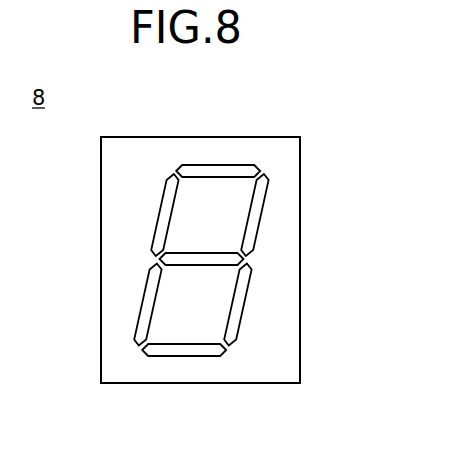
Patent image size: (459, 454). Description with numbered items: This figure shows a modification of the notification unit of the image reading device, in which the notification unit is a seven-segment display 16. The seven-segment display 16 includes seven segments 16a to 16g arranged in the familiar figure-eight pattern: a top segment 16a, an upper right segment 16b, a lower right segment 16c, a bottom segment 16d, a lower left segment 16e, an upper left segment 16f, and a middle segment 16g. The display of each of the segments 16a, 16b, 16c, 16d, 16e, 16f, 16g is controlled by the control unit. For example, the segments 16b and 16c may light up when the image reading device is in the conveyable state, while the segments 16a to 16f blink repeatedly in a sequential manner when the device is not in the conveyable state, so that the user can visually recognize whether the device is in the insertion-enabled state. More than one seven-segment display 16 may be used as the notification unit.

The seven-segment display 16 is at (90, 176).
The segment 16a is at (217, 165).
The segment 16b is at (249, 216).
The segment 16c is at (237, 305).
The segment 16d is at (180, 356).
The segment 16e is at (145, 306).
The segment 16f is at (156, 217).
The segment 16g is at (200, 253).